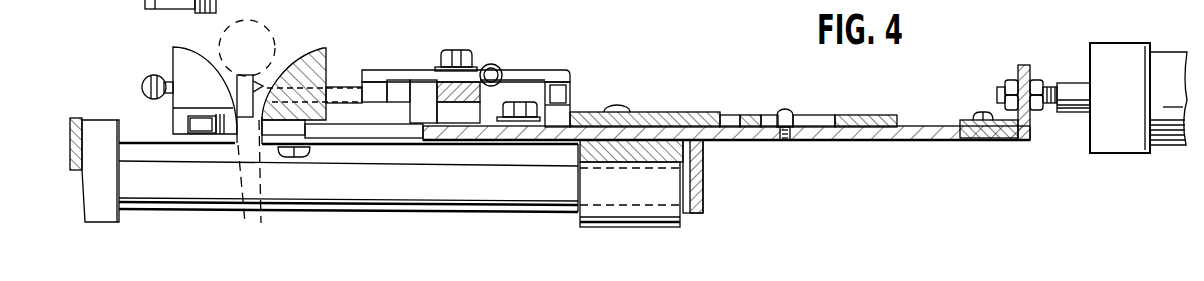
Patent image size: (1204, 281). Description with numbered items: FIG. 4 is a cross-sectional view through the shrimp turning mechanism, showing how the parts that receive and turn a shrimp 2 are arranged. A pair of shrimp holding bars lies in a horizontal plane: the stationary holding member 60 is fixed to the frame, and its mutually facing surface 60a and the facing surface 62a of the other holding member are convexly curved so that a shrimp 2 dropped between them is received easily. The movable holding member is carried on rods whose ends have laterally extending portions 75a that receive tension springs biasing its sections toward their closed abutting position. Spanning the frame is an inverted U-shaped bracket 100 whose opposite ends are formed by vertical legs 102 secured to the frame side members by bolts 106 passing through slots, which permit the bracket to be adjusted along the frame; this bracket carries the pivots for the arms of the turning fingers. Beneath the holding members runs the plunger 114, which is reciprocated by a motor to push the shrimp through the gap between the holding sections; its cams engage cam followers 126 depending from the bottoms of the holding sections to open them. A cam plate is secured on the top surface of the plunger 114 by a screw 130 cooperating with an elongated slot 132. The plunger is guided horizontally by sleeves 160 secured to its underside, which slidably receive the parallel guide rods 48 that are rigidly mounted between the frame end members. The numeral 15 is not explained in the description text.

The shrimp 2 is at (257, 53).
The handle 15 is at (230, 0).
The guide rods 48 is at (706, 181).
The stationary holding member 60 is at (328, 73).
The convexly curved facing surface 60a is at (306, 53).
The convexly curved facing surface 62a is at (175, 49).
The laterally extending portion 75a is at (166, 9).
The inverted U-shaped bracket 100 is at (433, 85).
The vertical legs 102 is at (474, 108).
The bolts 106 is at (531, 102).
The plunger 114 is at (928, 142).
The cam followers 126 is at (186, 127).
The screw 130 is at (787, 112).
The elongated slot 132 is at (810, 117).
The sleeves 160 is at (683, 215).